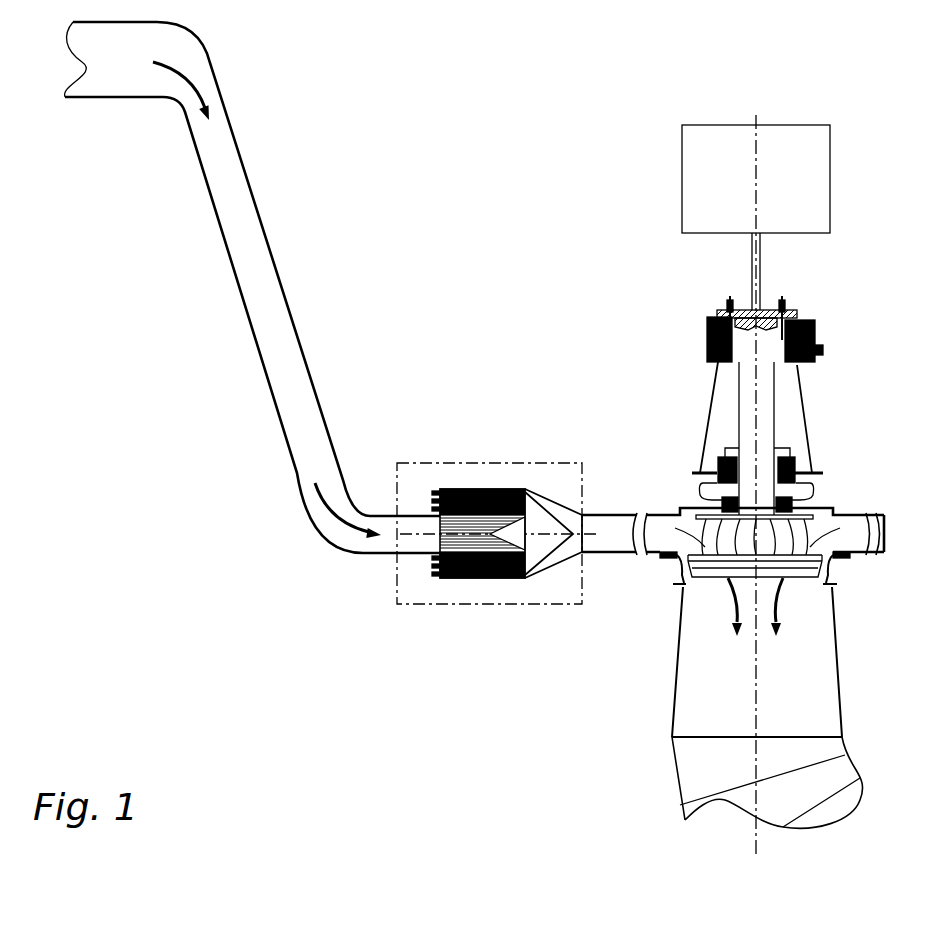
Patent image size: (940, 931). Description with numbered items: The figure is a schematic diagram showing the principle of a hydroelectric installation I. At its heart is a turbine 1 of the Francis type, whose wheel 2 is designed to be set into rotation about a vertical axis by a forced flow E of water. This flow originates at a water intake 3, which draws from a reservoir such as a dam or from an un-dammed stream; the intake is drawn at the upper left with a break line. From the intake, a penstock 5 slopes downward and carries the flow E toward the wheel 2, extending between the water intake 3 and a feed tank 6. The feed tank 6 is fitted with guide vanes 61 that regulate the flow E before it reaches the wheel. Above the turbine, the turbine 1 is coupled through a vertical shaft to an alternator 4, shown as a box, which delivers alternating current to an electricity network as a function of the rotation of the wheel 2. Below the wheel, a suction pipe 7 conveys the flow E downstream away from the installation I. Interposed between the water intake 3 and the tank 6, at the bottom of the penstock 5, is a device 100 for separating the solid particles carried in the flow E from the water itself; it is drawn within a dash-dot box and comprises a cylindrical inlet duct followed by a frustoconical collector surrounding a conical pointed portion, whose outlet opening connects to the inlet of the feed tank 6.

The installation I is at (550, 165).
The turbine 1 is at (679, 333).
The wheel 2 is at (806, 517).
The water intake 3 is at (95, 72).
The alternator 4 is at (756, 179).
The penstock 5 is at (258, 275).
The feed tank 6 is at (610, 542).
The guide vanes 61 is at (638, 520).
The suction pipe 7 is at (810, 713).
The device 100 is at (523, 463).